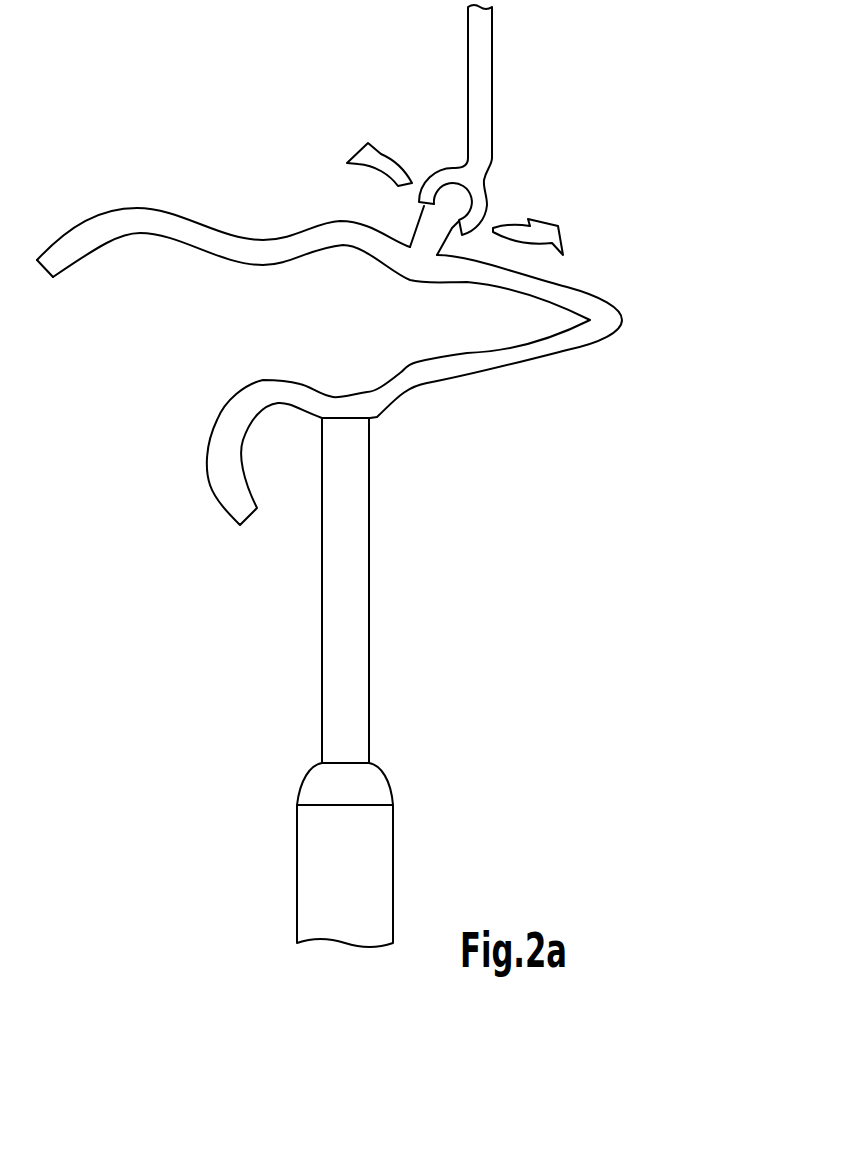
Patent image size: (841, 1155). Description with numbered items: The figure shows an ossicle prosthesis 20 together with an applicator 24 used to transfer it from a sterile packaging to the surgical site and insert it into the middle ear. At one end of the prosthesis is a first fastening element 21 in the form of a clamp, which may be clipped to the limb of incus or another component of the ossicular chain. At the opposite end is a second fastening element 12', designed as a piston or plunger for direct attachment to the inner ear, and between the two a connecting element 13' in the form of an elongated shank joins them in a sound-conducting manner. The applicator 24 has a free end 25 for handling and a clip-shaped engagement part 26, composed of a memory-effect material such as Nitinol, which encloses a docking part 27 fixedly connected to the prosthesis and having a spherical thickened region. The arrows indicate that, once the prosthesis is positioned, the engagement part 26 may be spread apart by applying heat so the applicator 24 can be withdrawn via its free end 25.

The ossicle prosthesis 20 is at (620, 155).
The first fastening element 21 is at (480, 373).
The applicator 24 is at (492, 68).
The free end 25 is at (472, 48).
The engagement part 26 is at (450, 165).
The docking part 27 is at (447, 210).
The connecting element 13' is at (388, 590).
The second fastening element 12' is at (387, 855).